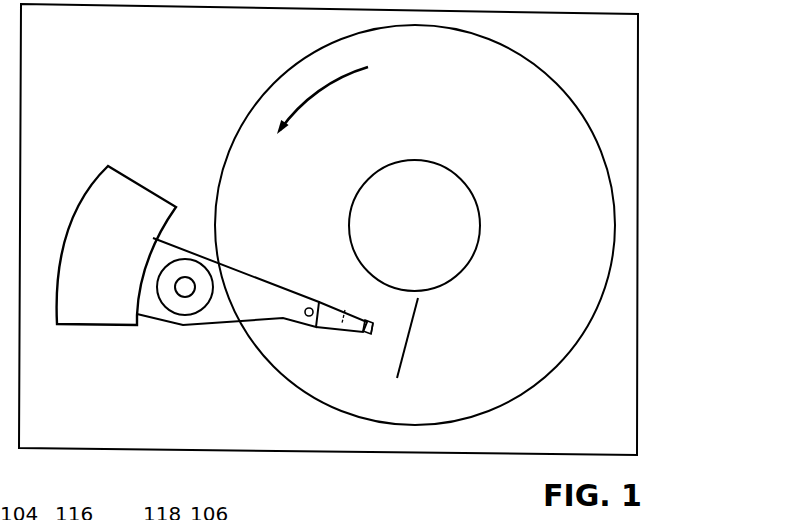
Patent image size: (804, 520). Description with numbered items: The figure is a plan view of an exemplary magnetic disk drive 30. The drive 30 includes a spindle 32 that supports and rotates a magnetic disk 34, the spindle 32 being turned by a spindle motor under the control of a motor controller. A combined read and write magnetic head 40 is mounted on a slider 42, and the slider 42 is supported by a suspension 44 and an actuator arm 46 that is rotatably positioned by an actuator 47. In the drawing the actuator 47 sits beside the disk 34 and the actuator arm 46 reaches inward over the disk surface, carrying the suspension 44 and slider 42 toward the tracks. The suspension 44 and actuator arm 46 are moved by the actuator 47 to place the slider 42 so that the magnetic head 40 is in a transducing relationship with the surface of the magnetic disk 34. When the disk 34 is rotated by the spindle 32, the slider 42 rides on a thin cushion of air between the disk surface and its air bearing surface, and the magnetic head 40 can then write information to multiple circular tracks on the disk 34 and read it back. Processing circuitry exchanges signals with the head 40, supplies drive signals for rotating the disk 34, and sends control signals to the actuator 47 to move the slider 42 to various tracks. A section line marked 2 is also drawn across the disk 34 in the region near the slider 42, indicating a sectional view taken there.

The magnetic disk drive 30 is at (660, 50).
The spindle 32 is at (455, 170).
The magnetic disk 34 is at (558, 248).
The magnetic head 40 is at (368, 334).
The slider 42 is at (372, 320).
The suspension 44 is at (323, 329).
The actuator arm 46 is at (240, 266).
The actuator 47 is at (138, 190).
The section line 2- 2 is at (426, 307).